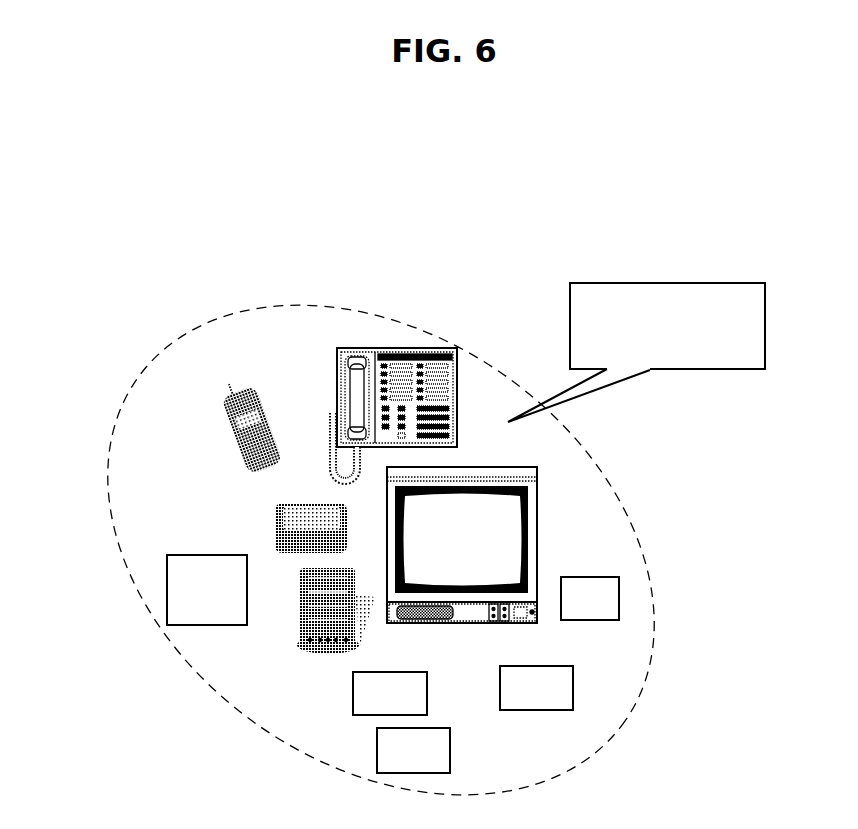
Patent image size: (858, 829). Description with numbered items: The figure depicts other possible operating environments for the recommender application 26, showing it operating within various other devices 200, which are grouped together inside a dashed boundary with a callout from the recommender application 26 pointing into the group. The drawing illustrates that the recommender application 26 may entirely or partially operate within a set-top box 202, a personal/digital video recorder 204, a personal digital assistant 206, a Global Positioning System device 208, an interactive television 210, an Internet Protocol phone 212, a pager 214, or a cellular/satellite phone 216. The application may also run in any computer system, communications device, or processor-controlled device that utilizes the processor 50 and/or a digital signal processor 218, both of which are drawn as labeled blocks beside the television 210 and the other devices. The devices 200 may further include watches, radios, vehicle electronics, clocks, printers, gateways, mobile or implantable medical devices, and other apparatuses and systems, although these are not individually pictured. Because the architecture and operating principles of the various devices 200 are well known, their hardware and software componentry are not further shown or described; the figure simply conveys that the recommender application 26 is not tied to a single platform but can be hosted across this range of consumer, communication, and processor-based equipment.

The devices 200 is at (254, 309).
The recommender application 26 is at (765, 300).
The Internet Protocol (IP) phone 212 is at (337, 361).
The cellular/satellite phone 216 is at (237, 421).
The interactive television 210 is at (537, 513).
The pager 214 is at (275, 521).
The personal digital assistant (PDA) 206 is at (298, 638).
The personal/digital video recorder (PVR/DVR) 204 is at (168, 555).
The Global Positioning System (GPS) device 208 is at (353, 684).
The digital signal processor (DP/DSP) 218 is at (573, 687).
The set-top box (STB) 202 is at (450, 748).
The processor 50 is at (603, 577).